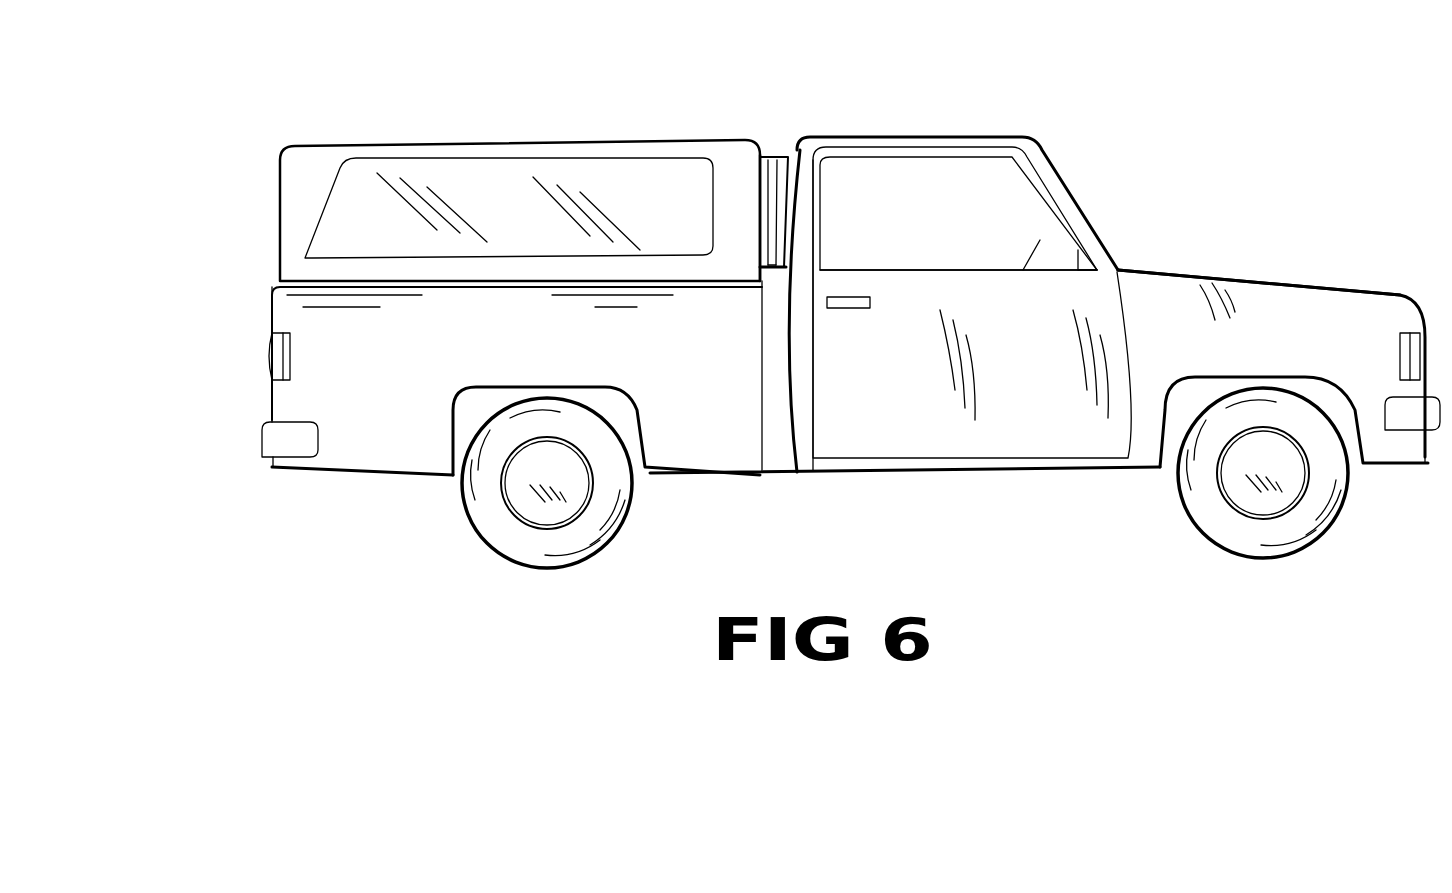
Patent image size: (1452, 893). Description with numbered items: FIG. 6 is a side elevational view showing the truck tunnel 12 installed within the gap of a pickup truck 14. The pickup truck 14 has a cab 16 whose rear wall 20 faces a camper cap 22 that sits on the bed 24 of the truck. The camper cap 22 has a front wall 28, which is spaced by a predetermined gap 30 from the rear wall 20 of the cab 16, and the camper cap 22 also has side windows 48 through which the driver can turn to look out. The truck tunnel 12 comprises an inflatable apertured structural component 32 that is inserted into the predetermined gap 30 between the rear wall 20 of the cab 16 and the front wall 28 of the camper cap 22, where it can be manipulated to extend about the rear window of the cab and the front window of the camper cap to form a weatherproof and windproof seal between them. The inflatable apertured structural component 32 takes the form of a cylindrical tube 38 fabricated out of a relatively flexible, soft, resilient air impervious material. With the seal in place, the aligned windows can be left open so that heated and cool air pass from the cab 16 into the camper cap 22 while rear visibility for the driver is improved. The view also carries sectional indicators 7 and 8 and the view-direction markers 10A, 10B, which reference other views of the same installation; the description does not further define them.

The section line 7- 7 is at (268, 225).
The section line 8- 8 is at (848, 197).
The seal assembly 10A is at (278, 180).
The seal assembly 10B is at (1222, 168).
The truck tunnel 12 is at (797, 247).
The pickup truck 14 is at (1267, 278).
The cab 16 is at (957, 134).
The rear wall 20 is at (790, 217).
The camper cap 22 is at (384, 146).
The bed 24 is at (283, 311).
The front wall 28 is at (760, 207).
The predetermined gap 30 is at (782, 147).
The inflatable apertured structural component 32 is at (758, 250).
The cylindrical tube 38 is at (772, 257).
The side windows 48 is at (583, 172).